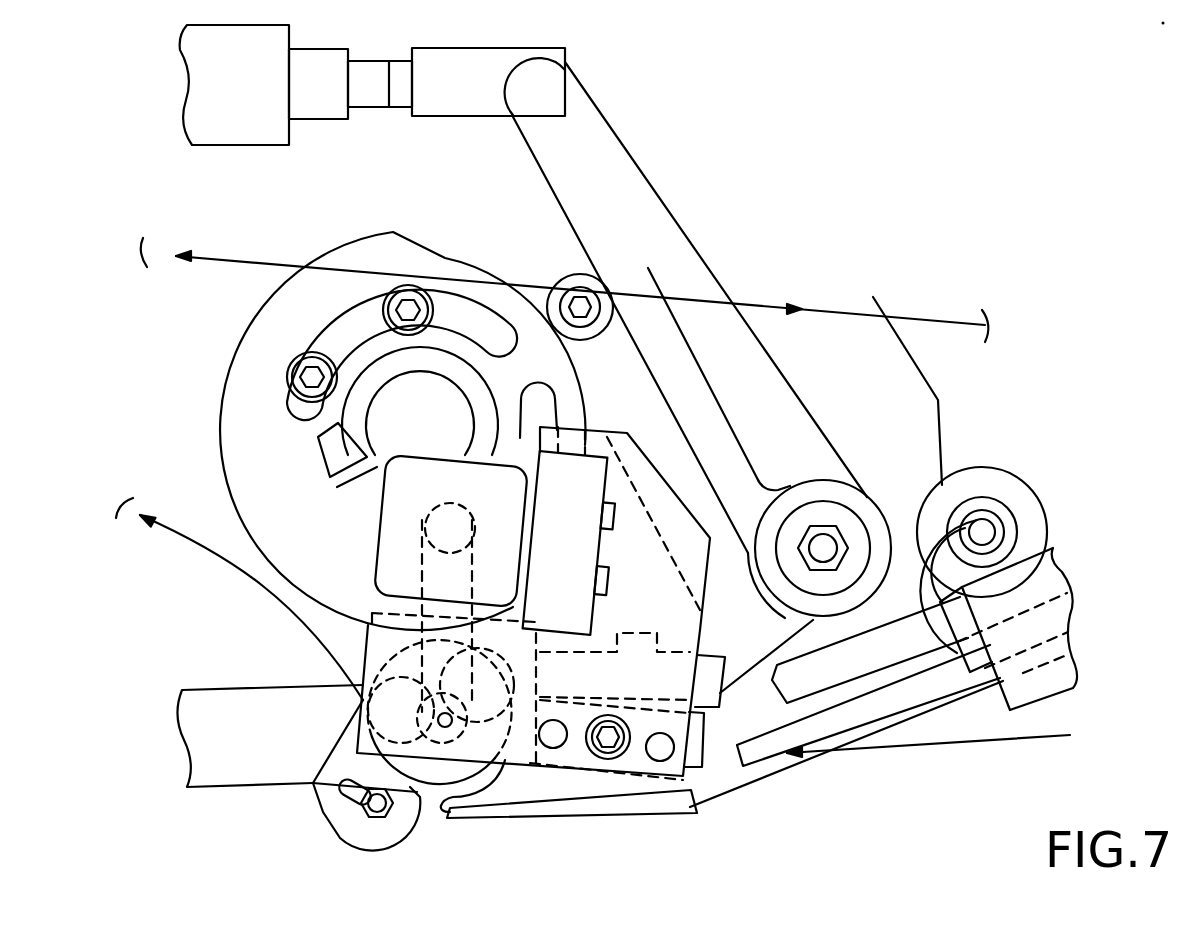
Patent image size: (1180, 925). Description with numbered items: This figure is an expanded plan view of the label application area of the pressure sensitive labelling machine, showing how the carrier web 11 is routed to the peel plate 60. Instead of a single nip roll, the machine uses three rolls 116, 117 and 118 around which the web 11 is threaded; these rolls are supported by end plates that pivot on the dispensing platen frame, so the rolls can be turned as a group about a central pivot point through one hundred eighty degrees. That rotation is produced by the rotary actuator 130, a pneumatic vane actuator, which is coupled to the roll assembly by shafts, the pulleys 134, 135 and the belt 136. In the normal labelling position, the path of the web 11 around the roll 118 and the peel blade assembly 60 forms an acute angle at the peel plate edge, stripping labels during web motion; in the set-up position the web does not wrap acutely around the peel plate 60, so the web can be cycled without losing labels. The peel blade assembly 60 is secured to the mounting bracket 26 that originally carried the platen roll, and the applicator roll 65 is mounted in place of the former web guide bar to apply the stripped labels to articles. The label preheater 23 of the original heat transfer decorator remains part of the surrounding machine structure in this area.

The carrier web 11 is at (220, 567).
The label preheater 23 is at (855, 713).
The mounting bracket 26 is at (718, 677).
The peel blade assembly 60 is at (533, 803).
The applicator roll 65 is at (368, 840).
The roll 116 is at (362, 695).
The roll 117 is at (497, 660).
The roll 118 is at (440, 812).
The rotary actuator 130 is at (378, 560).
The pulley 134 is at (483, 497).
The pulley 135 is at (357, 740).
The belt 136 is at (472, 561).